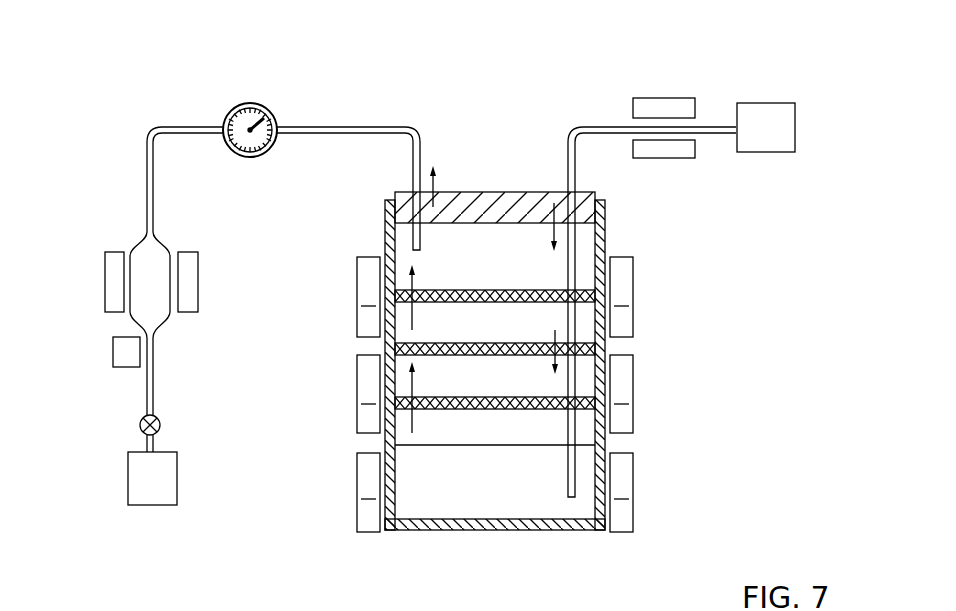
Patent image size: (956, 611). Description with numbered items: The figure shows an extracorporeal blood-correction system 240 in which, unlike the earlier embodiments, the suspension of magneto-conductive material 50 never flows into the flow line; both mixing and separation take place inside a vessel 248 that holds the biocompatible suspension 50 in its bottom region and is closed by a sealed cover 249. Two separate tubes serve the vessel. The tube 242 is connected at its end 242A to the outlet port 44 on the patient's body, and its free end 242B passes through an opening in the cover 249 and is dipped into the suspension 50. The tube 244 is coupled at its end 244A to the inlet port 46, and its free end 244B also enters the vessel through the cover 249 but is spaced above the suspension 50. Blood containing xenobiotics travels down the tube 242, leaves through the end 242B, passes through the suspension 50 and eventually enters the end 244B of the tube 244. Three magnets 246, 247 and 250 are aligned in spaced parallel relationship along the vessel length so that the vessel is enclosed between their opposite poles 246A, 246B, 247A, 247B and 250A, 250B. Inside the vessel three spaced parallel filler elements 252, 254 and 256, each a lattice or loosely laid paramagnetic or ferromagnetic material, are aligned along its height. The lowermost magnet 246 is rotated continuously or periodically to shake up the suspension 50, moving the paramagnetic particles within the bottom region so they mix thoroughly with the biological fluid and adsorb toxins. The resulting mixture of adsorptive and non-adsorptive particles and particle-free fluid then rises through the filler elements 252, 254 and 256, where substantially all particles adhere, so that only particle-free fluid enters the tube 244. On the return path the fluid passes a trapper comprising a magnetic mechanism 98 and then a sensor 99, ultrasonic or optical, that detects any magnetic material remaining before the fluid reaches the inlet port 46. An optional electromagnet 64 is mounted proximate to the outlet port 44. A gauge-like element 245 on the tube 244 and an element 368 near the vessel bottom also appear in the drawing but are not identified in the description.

The system 240 is at (576, 36).
The tube 242 is at (588, 127).
The end of tube 242A is at (723, 127).
The free end of tube 242B is at (576, 472).
The tube 244 is at (331, 127).
The end of tube 244A is at (146, 440).
The free end of tube 244B is at (421, 242).
The pressure gauge 245 is at (240, 104).
The lowermost magnet 246 is at (340, 524).
The pole of magnet 246A is at (358, 487).
The pole of magnet 246B is at (633, 512).
The magnet 247 is at (340, 427).
The pole of magnet 247A is at (633, 415).
The pole of magnet 247B is at (358, 388).
The vessel 248 is at (545, 532).
The sealed cover 249 is at (583, 192).
The magnet 250 is at (340, 338).
The pole of magnet 250A is at (358, 290).
The pole of magnet 250B is at (633, 292).
The filler element 252 is at (607, 360).
The filler element 254 is at (605, 348).
The filler element 256 is at (600, 249).
The outlet port 44 is at (769, 104).
The inlet port 46 is at (150, 488).
The suspension of magneto-conductive material 50 is at (463, 493).
The electromagnet 64 is at (660, 98).
The magnetic mechanism 98 is at (92, 279).
The sensor 99 is at (127, 354).
The drain conduit 368 is at (545, 610).